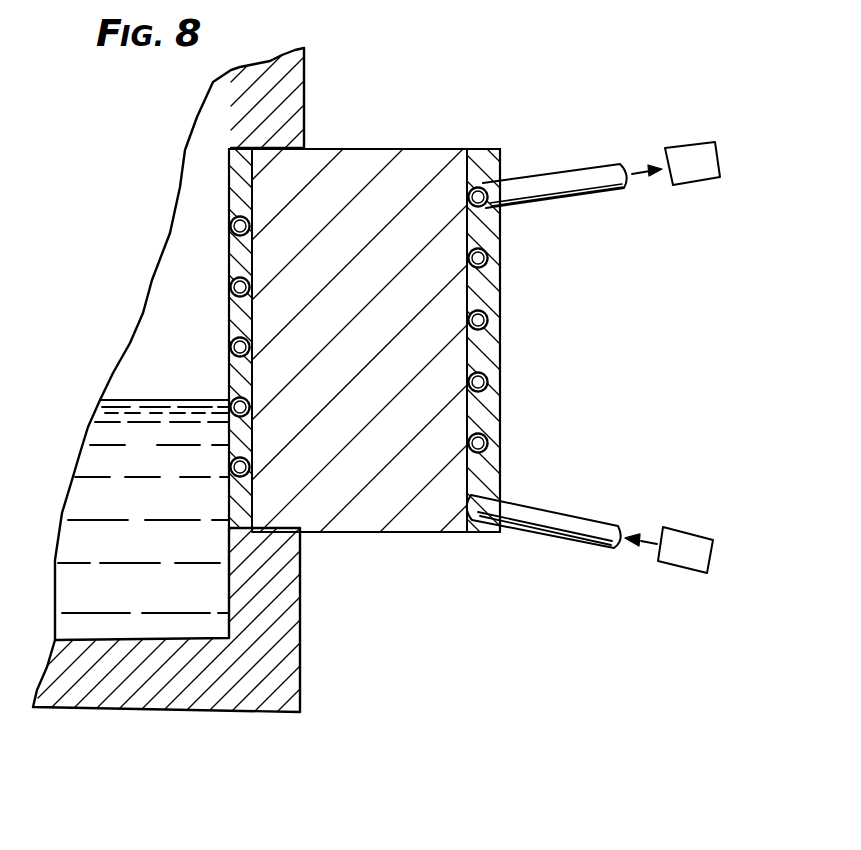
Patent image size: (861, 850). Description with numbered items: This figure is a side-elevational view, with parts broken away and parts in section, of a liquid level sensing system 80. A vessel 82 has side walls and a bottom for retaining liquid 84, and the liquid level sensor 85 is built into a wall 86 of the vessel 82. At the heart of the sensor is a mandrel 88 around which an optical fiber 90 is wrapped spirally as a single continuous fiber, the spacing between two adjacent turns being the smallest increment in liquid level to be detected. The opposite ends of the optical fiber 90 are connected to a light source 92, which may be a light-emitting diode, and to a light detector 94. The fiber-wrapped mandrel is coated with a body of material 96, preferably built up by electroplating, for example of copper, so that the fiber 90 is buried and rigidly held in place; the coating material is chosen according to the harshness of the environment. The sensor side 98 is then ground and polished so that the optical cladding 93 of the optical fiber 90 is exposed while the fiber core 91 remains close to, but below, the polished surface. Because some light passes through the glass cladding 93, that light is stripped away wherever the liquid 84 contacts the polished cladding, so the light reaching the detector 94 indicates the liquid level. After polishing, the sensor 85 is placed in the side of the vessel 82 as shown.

The liquid level sensing system 80 is at (444, 104).
The vessel 82 is at (305, 53).
The liquid 84 is at (125, 455).
The liquid level sensor 85 is at (442, 148).
The wall 86 is at (290, 113).
The mandrel 88 is at (375, 512).
The optical fiber 90 is at (533, 173).
The fiber core 91 is at (487, 378).
The light source 92 is at (687, 558).
The optical cladding 93 is at (484, 389).
The light detector 94 is at (690, 173).
The body of material 96 is at (492, 290).
The sensor side 98 is at (229, 310).